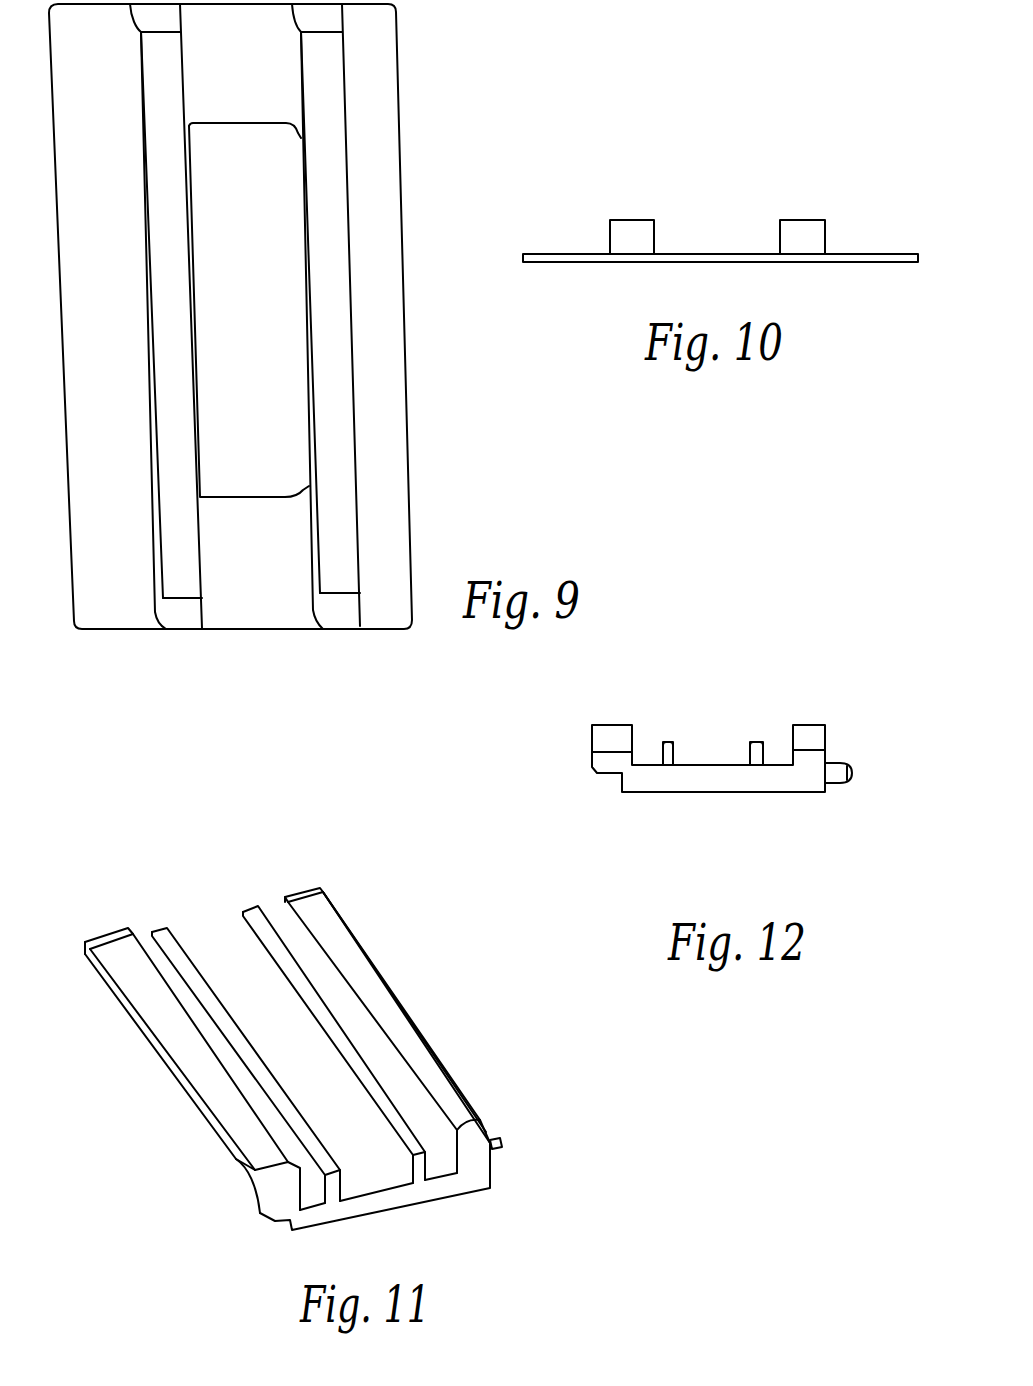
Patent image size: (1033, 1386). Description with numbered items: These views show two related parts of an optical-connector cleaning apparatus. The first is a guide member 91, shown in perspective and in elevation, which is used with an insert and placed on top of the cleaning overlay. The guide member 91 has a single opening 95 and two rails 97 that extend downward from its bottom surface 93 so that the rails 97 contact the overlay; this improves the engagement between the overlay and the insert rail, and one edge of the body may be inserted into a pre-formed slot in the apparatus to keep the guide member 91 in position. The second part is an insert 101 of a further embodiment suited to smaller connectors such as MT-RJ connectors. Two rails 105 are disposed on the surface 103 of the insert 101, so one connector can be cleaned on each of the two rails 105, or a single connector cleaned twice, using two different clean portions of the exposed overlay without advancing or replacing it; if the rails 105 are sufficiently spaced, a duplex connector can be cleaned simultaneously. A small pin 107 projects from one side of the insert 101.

In FIG. 9, the guide member 91 is at (433, 101).
In FIG. 10, the guide member 91 is at (822, 142).
In FIG. 9, the bottom surface 93 is at (398, 434).
In FIG. 10, the bottom surface 93 is at (567, 253).
In FIG. 9, the opening 95 is at (262, 351).
In FIG. 9, the rails 97 is at (193, 563).
In FIG. 10, the rails 97 is at (795, 220).
In FIG. 12, the insert 101 is at (714, 801).
In FIG. 11, the insert 101 is at (376, 897).
In FIG. 12, the surface 103 is at (780, 763).
In FIG. 11, the surface 103 is at (345, 1125).
In FIG. 12, the rails 105 is at (755, 742).
In FIG. 11, the rails 105 is at (250, 907).
In FIG. 12, the pin 107 is at (837, 763).
In FIG. 11, the pin 107 is at (503, 1145).